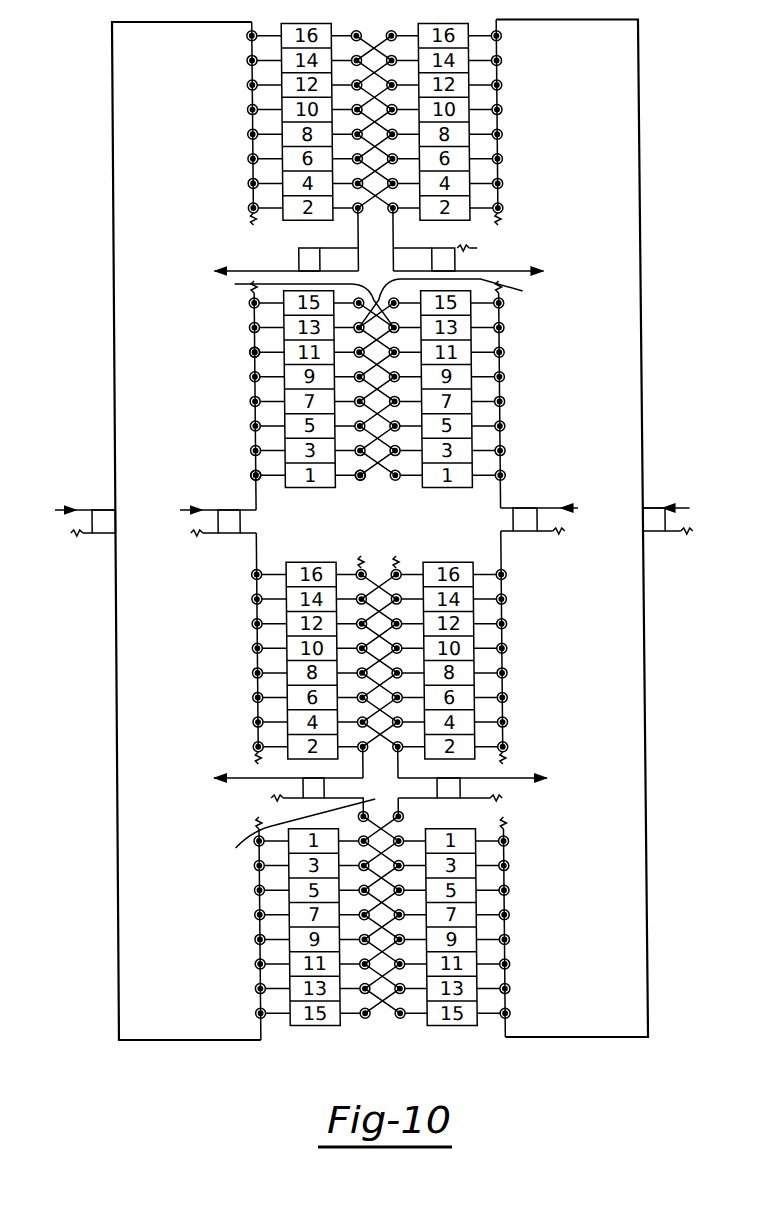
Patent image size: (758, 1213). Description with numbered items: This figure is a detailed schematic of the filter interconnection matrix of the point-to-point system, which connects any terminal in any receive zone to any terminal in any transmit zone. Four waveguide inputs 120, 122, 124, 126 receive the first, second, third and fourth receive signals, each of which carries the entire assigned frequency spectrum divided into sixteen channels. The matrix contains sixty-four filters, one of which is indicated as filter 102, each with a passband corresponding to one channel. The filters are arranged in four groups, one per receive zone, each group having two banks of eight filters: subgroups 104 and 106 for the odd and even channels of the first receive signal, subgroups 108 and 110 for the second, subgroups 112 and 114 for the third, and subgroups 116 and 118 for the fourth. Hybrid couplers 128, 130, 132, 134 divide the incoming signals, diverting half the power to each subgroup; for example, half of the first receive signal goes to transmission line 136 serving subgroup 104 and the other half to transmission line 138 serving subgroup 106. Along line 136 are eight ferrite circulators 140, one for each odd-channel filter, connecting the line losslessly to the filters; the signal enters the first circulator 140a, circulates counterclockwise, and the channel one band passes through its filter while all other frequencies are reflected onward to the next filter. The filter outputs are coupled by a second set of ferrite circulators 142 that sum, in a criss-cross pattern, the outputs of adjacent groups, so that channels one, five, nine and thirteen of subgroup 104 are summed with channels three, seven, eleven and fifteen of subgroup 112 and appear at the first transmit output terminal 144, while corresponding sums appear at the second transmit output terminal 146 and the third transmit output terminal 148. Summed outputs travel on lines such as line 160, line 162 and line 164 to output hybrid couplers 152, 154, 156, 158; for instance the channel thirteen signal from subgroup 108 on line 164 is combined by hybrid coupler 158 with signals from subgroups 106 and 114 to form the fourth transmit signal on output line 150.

The filter 102 is at (322, 487).
The filter subgroup for odd channels of R1 104 is at (245, 405).
The filter subgroup for even channels of R1 106 is at (246, 668).
The filter subgroup for odd channels of R2 108 is at (525, 933).
The filter subgroup for even channels of R2 110 is at (516, 108).
The filter subgroup for odd channels of R3 112 is at (516, 404).
The filter subgroup for even channels of R3 114 is at (515, 670).
The filter subgroup for odd channels of R4 116 is at (249, 935).
The filter subgroup for even channels of R4 118 is at (243, 122).
The waveguide input 120 is at (182, 509).
The waveguide input 122 is at (679, 506).
The waveguide input 124 is at (561, 506).
The waveguide input 126 is at (79, 509).
The hybrid coupler 128 is at (226, 534).
The hybrid coupler 130 is at (657, 532).
The hybrid coupler 132 is at (527, 532).
The hybrid coupler 134 is at (96, 535).
The transmission line 136 is at (250, 505).
The transmission line 138 is at (252, 556).
The ferrite circulator 140 is at (248, 355).
The first ferrite circulator 140a is at (256, 483).
The second-set ferrite circulator 142 is at (363, 481).
The output terminal for T1 144 is at (531, 268).
The output terminal for T2 146 is at (545, 776).
The output terminal for T3 148 is at (212, 268).
The output line for T4 150 is at (223, 776).
The hybrid coupler 152 is at (430, 259).
The hybrid coupler 154 is at (447, 800).
The hybrid coupler 156 is at (296, 255).
The hybrid coupler 158 is at (296, 790).
The output line 160 is at (292, 304).
The output line 162 is at (471, 303).
The output line 164 is at (284, 837).